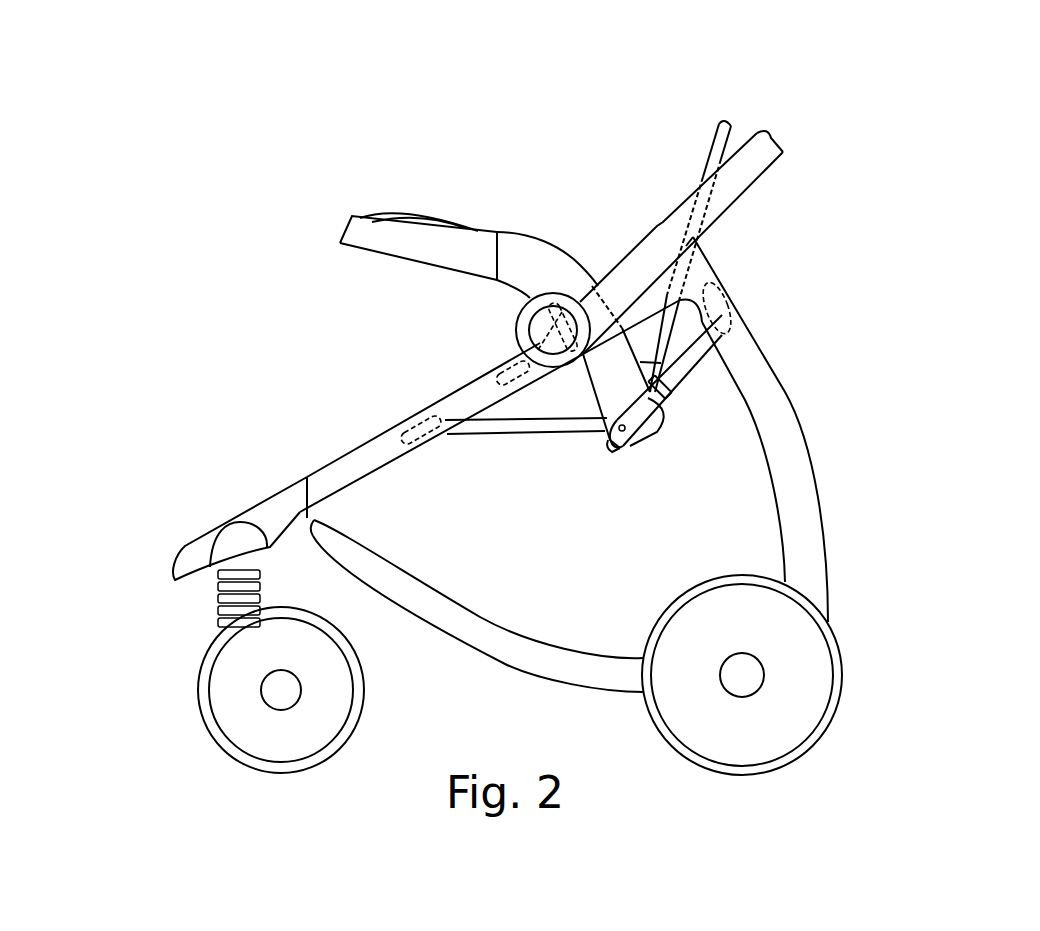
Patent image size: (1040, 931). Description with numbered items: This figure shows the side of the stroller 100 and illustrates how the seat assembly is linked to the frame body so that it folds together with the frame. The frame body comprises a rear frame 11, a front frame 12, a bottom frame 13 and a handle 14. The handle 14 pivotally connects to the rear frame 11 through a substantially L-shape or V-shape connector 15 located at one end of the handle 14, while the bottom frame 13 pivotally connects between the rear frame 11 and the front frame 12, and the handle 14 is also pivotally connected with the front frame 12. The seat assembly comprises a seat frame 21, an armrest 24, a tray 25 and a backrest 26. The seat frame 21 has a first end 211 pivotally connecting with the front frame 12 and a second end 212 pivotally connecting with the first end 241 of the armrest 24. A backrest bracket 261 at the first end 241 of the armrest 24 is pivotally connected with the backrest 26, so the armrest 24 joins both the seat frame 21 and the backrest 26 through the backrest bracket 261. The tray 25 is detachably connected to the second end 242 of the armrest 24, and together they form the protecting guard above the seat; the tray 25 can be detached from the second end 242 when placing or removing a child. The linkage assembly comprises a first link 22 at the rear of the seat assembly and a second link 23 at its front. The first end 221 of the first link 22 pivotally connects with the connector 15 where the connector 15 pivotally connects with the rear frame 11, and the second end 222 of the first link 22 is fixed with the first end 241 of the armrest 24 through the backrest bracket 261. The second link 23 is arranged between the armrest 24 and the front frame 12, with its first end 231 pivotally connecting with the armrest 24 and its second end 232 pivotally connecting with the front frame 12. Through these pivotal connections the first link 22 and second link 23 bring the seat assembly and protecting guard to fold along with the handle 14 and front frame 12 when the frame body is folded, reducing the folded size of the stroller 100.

The stroller 100 is at (922, 110).
The rear frame 11 is at (787, 490).
The front frame 12 is at (385, 458).
The bottom frame 13 is at (463, 647).
The handle 14 is at (680, 217).
The connector 15 is at (703, 263).
The seat frame 21 is at (500, 432).
The first link 22 is at (713, 382).
The second link 23 is at (522, 360).
The armrest 24 is at (597, 380).
The tray 25 is at (420, 214).
The backrest 26 is at (727, 120).
The first end of seat frame 211 is at (437, 430).
The second end of seat frame 212 is at (598, 428).
The first end of first link 221 is at (730, 282).
The second end of first link 222 is at (627, 432).
The first end of second link 231 is at (556, 303).
The second end of second link 232 is at (497, 368).
The first end of armrest 241 is at (650, 432).
The second end of armrest 242 is at (533, 250).
The backrest bracket 261 is at (667, 408).